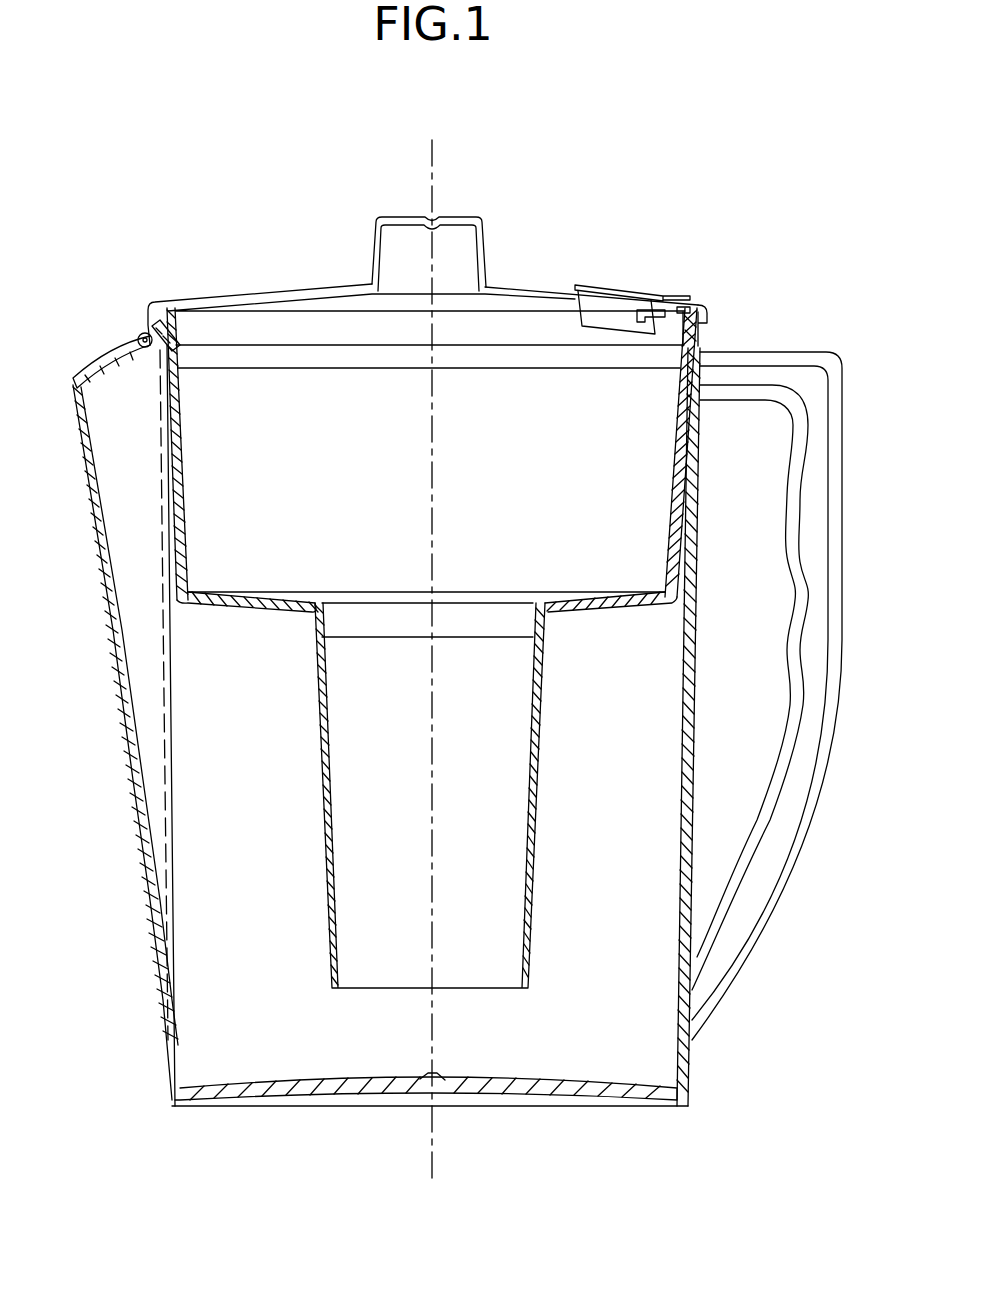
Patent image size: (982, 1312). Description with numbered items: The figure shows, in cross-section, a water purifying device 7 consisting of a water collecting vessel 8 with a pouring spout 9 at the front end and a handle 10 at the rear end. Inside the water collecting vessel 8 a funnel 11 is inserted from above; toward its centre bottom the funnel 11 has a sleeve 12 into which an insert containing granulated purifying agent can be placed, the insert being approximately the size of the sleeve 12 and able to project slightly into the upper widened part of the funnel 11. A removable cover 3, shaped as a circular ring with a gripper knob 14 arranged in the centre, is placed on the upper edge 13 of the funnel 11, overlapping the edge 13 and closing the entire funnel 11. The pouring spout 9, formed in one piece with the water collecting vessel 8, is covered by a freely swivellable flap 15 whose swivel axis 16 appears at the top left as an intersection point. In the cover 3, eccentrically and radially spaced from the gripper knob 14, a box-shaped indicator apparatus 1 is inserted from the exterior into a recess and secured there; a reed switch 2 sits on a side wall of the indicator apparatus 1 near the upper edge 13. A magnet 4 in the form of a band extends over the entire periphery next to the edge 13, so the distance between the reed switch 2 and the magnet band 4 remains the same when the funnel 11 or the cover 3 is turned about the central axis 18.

The indicator apparatus 1 is at (592, 287).
The reed switch 2 is at (640, 312).
The cover 3 is at (453, 265).
The magnet band 4 is at (707, 340).
The water purifying device 7 is at (433, 785).
The water collecting vessel 8 is at (683, 1068).
The pouring spout 9 is at (102, 537).
The handle 10 is at (793, 795).
The funnel 11 is at (600, 672).
The sleeve 12 is at (330, 780).
The edge 13 is at (170, 322).
The gripper knob 14 is at (478, 245).
The flap 15 is at (103, 363).
The swivel axis 16 is at (142, 332).
The central axis 18 is at (428, 163).